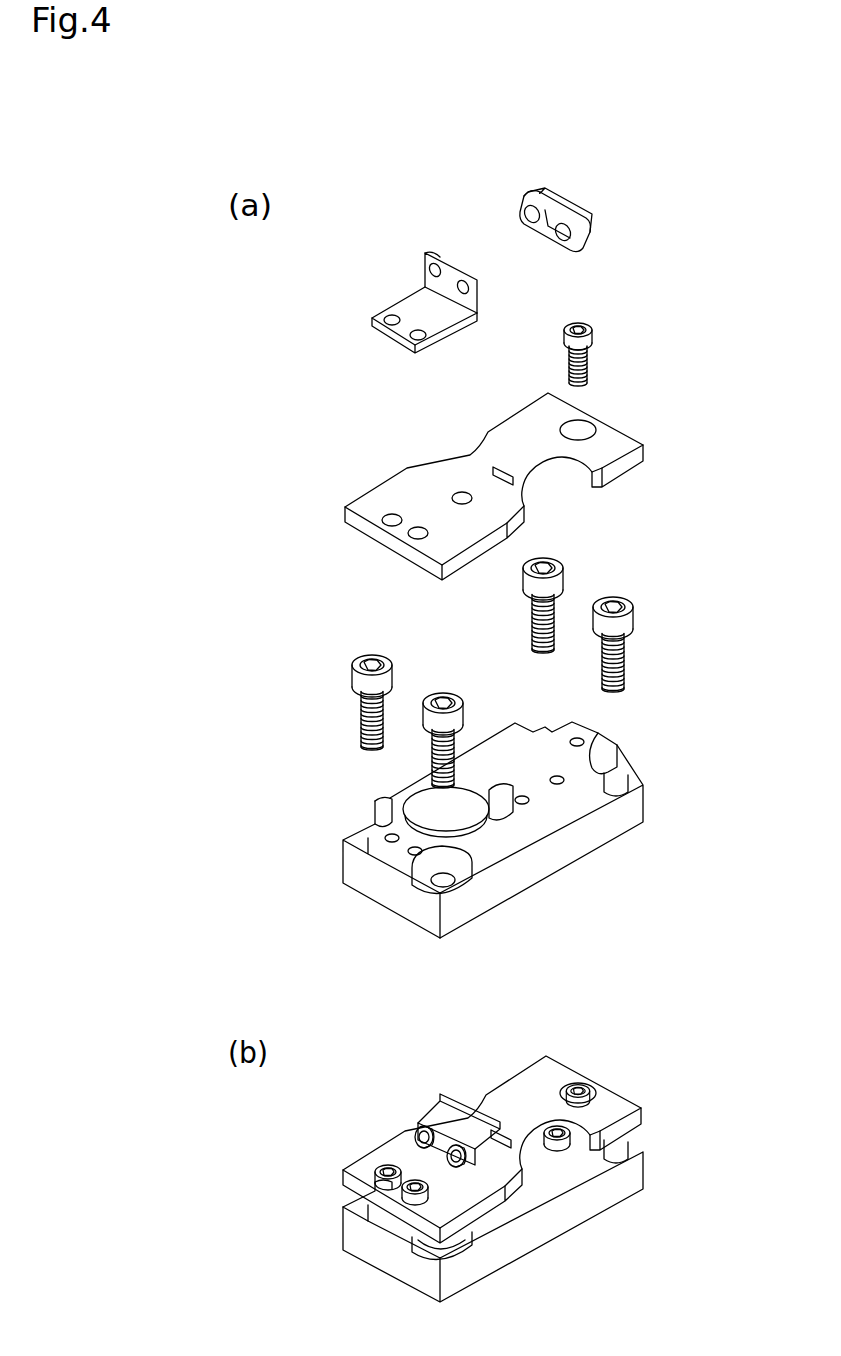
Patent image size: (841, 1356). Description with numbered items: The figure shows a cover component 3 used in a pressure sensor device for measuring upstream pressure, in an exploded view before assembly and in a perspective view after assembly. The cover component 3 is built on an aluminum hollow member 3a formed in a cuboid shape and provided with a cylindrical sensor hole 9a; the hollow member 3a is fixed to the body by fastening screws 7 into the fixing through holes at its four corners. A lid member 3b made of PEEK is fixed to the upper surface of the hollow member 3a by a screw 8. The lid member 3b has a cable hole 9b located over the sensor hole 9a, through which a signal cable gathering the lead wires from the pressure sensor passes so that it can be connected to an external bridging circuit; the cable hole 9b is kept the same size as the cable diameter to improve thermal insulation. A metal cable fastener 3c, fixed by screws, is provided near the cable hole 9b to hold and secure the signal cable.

The cover component 3 is at (619, 1088).
The hollow member 3a is at (592, 735).
The lid member 3b is at (610, 447).
The cable fastener 3c is at (468, 303).
The screws 7 is at (627, 652).
The screw 8 is at (590, 346).
The sensor hole 9a is at (440, 817).
The cable hole 9b is at (453, 487).